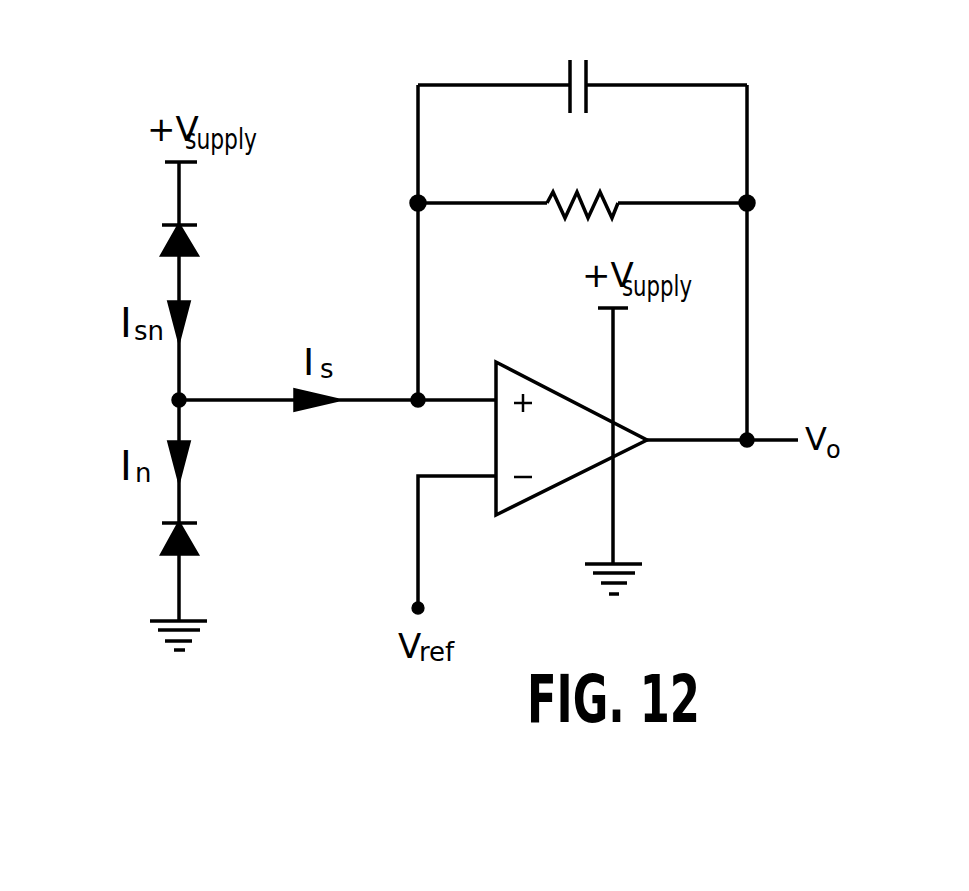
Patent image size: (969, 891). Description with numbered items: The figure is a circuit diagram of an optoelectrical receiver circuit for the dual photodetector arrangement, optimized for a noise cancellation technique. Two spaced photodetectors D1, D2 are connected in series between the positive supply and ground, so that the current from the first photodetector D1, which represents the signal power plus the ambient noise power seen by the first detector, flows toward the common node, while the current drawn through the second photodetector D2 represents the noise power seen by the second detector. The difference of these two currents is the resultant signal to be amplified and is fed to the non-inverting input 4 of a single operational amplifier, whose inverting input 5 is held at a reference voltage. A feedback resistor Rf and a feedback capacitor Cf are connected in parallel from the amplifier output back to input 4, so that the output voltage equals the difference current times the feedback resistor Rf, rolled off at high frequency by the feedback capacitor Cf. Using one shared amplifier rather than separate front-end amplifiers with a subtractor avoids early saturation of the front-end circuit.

The non-inverting input of operational amplifier 4 is at (457, 385).
The inverting input of operational amplifier 5 is at (454, 526).
The photodetector D1 is at (221, 239).
The photodetector D2 is at (221, 542).
The feedback capacitor Cf is at (579, 61).
The feedback resistor Rf is at (582, 179).